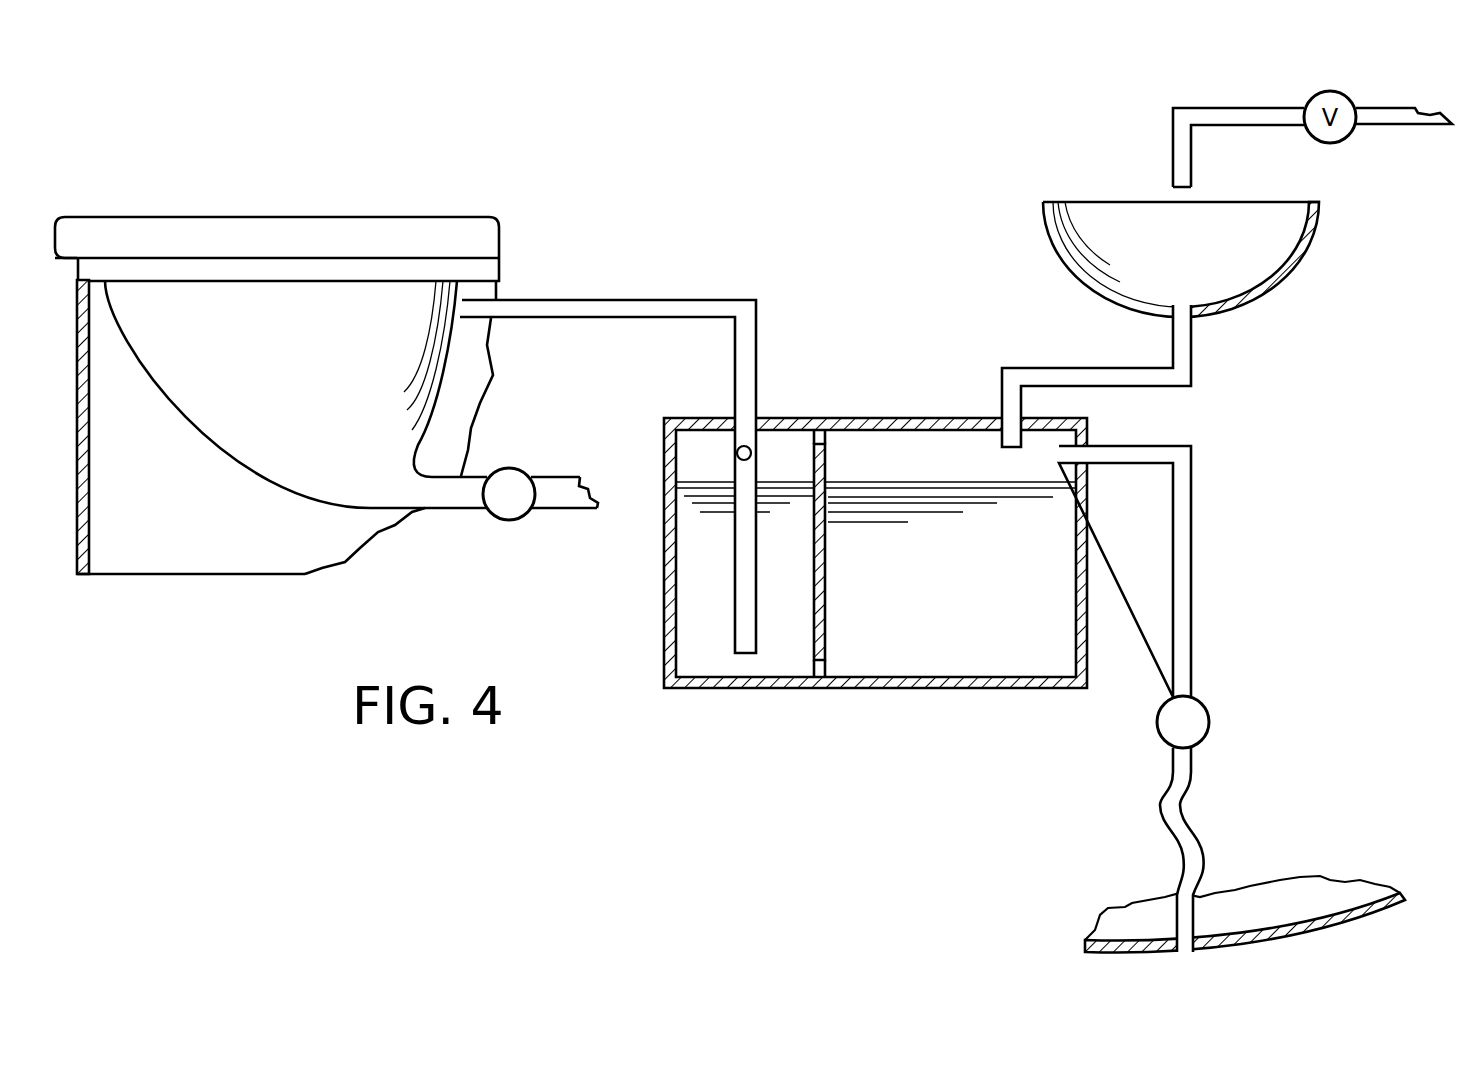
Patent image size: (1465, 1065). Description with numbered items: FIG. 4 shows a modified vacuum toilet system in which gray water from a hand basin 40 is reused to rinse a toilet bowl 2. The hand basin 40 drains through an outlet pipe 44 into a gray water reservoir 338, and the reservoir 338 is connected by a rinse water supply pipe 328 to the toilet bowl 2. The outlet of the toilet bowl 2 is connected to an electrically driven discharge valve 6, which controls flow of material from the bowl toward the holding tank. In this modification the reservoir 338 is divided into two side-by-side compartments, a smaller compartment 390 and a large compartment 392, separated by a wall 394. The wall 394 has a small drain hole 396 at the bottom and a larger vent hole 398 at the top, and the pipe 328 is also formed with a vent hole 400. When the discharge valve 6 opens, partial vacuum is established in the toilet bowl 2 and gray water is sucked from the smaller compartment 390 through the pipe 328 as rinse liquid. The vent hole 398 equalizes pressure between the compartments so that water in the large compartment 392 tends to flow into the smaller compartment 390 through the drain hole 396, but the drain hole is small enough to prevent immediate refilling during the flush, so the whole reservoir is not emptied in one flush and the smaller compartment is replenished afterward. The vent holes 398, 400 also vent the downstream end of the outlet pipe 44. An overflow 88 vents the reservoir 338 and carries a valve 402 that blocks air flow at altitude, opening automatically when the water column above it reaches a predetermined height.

The toilet bowl 2 is at (238, 460).
The discharge valve 6 is at (512, 468).
The hand basin 40 is at (1085, 278).
The outlet pipe 44 is at (1193, 363).
The overflow 88 is at (1193, 487).
The rinse water supply pipe 328 is at (600, 300).
The gray water reservoir 338 is at (663, 565).
The smaller compartment 390 is at (710, 638).
The large compartment 392 is at (985, 647).
The wall 394 is at (826, 590).
The drain hole 396 is at (826, 667).
The vent hole 398 is at (826, 440).
The vent hole 400 is at (735, 453).
The valve 402 is at (1207, 703).